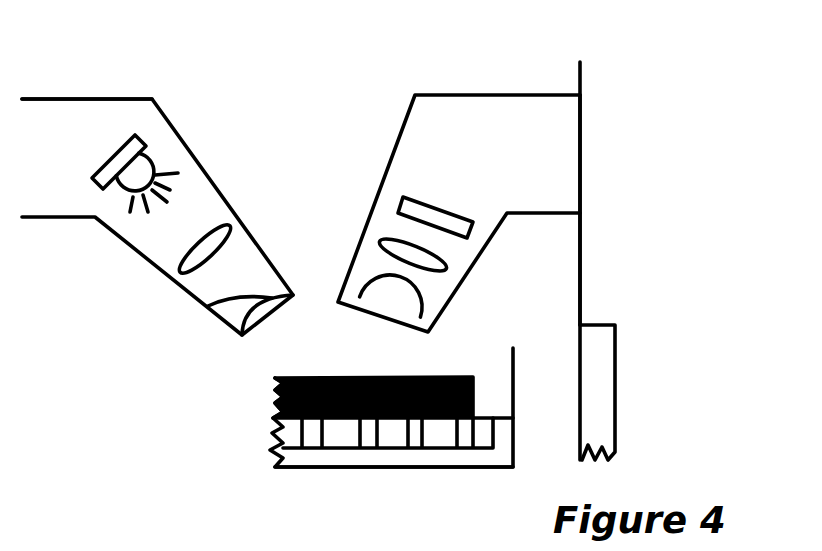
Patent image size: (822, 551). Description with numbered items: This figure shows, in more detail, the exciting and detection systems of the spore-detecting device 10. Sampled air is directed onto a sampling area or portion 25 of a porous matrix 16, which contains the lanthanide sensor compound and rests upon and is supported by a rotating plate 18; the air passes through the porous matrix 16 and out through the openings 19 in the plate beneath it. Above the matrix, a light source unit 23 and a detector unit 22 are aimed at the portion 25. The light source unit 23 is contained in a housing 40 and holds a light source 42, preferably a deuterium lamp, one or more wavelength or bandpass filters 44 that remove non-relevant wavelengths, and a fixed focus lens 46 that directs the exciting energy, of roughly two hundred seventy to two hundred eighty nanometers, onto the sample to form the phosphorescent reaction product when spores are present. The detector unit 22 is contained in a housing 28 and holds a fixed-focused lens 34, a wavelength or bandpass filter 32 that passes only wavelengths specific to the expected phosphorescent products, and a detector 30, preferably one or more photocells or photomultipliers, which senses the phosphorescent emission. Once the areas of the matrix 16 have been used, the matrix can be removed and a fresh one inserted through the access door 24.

The housing 10 is at (582, 243).
The porous matrix 16 is at (277, 402).
The rotating plate 18 is at (433, 467).
The solder bumps 19 is at (363, 458).
The detector unit 22 is at (662, 90).
The light source unit 23 is at (126, 299).
The access door 24 is at (617, 403).
The sampling area or portion 25 is at (363, 375).
The housing 28 is at (420, 95).
The detector 30 is at (460, 217).
The wavelength or bandpass filter 32 is at (400, 238).
The fixed-focused lens 34 is at (350, 268).
The housing 40 is at (40, 98).
The light source 42 is at (150, 128).
The wavelength or bandpass filter 44 is at (207, 225).
The fixed focus lens 46 is at (212, 308).